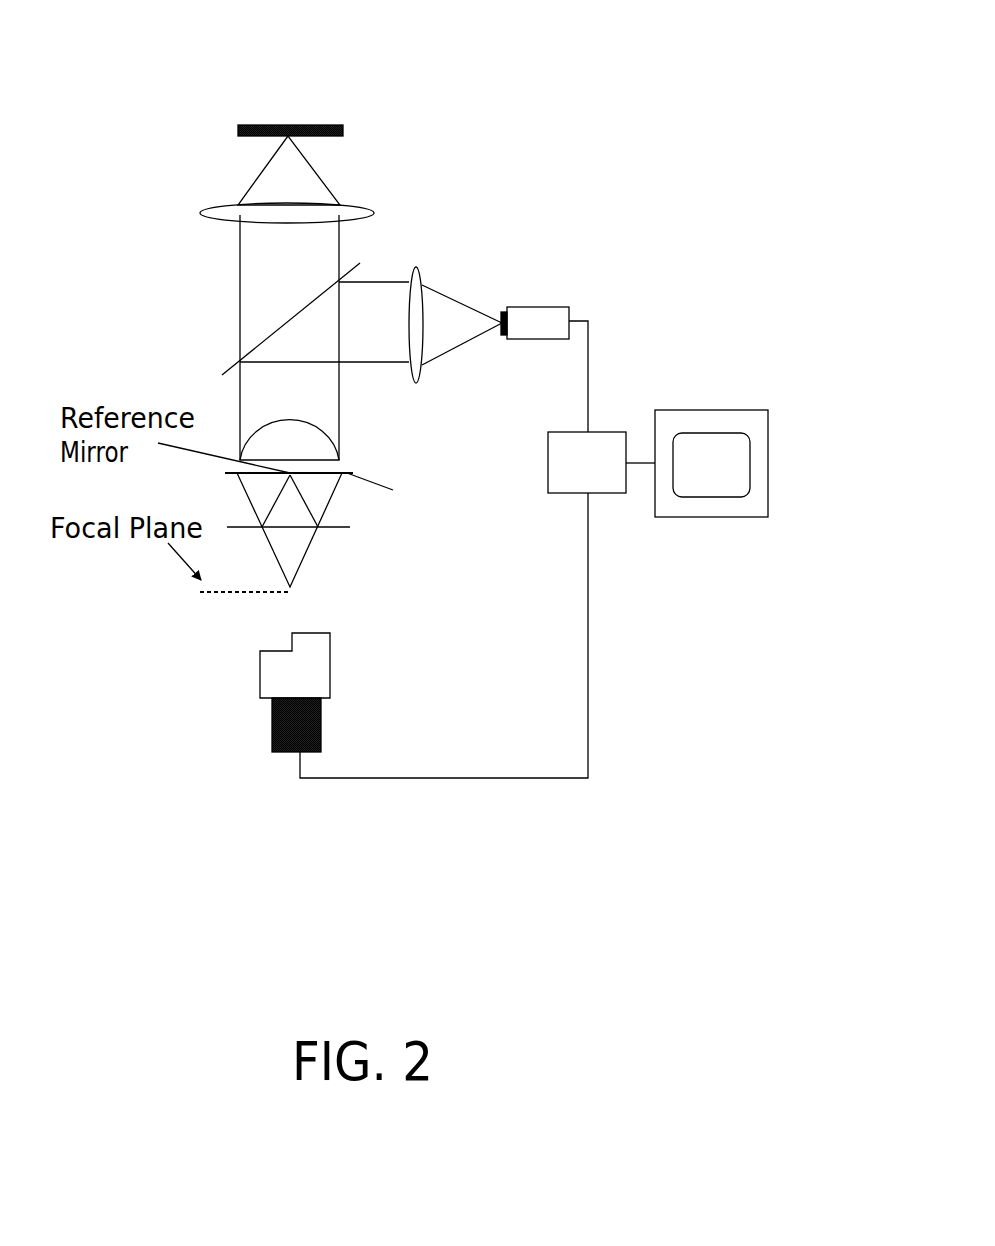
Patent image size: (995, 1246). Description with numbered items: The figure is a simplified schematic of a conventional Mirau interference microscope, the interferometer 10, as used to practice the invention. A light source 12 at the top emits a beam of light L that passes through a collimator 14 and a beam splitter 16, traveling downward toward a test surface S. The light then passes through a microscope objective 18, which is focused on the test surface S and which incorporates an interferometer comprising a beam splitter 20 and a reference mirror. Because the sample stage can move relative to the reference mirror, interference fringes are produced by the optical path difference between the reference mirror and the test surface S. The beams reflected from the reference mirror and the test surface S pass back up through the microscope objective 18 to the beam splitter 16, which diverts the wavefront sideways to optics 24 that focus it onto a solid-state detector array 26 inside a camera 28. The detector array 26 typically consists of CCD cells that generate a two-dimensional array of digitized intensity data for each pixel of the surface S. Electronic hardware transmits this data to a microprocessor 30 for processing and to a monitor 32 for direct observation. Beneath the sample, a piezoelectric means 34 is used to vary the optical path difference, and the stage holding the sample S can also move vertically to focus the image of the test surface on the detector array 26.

The interferometer 10 is at (775, 198).
The light source 12 is at (316, 124).
The beam of light L is at (298, 178).
The collimator 14 is at (212, 210).
The beam splitter 16 is at (263, 340).
The microscope objective 18 is at (325, 430).
The beam splitter 20 is at (350, 525).
The optics 24 is at (418, 268).
The solid-state detector array 26 is at (500, 315).
The camera 28 is at (570, 307).
The microprocessor 30 is at (610, 494).
The monitor 32 is at (772, 433).
The test surface S is at (318, 632).
The piezoelectric means 34 is at (273, 750).